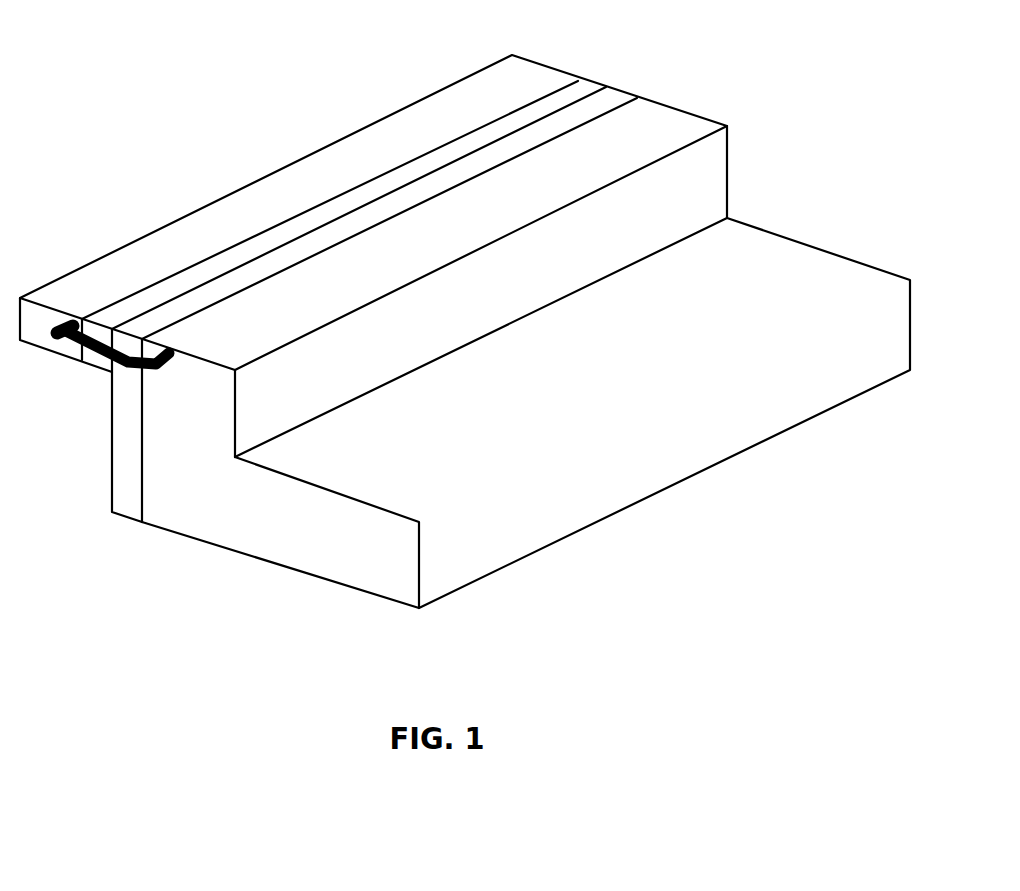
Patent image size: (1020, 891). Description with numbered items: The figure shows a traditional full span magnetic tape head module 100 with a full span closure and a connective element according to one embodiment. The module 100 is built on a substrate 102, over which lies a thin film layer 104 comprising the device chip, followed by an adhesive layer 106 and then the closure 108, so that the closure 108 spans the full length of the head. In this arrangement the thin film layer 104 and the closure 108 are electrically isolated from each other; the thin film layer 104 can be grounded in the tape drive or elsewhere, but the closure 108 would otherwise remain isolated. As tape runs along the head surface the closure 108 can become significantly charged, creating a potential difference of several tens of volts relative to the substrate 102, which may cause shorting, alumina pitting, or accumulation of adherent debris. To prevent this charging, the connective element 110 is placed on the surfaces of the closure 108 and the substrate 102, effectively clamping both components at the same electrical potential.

The full span magnetic tape head module 100 is at (465, 351).
The substrate 102 is at (347, 588).
The thin film layer 104 is at (122, 514).
The adhesive layer 106 is at (578, 81).
The closure 108 is at (248, 185).
The connective element 110 is at (50, 341).